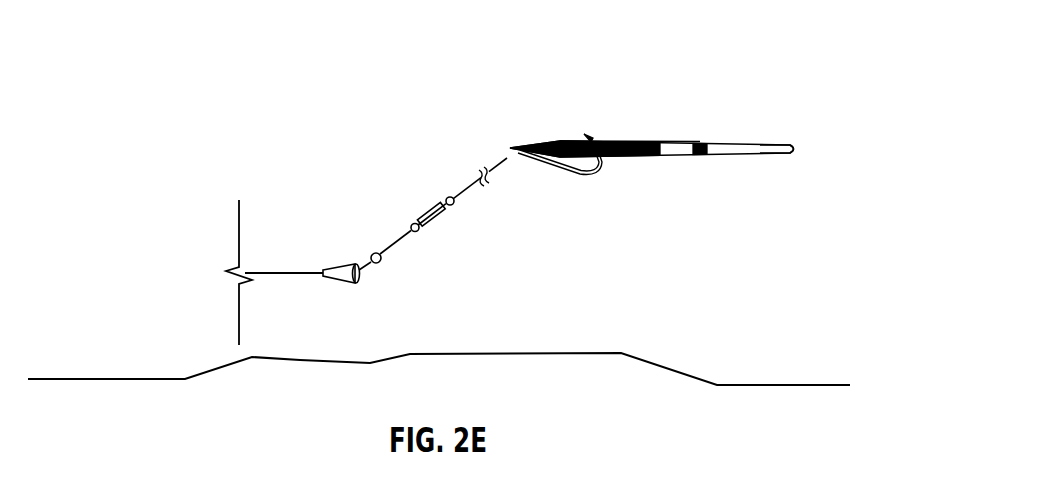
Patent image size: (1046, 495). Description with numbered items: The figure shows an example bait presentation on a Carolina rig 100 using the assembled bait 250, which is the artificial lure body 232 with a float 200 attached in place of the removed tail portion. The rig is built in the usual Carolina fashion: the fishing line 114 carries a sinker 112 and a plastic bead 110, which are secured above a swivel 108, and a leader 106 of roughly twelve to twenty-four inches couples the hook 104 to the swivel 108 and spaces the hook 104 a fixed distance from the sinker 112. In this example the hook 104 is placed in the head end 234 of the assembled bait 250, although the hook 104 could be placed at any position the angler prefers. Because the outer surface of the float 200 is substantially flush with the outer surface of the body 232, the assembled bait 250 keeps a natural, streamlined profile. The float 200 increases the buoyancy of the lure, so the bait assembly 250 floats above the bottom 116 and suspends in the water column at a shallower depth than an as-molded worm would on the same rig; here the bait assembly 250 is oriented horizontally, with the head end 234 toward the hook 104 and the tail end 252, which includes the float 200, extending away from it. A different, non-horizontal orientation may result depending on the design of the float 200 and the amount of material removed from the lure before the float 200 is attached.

The Carolina rig 100 is at (279, 87).
The hook 104 is at (560, 170).
The leader 106 is at (503, 160).
The swivel 108 is at (428, 207).
The plastic bead 110 is at (374, 252).
The sinker 112 is at (337, 268).
The fishing line 114 is at (285, 272).
The bottom 116 is at (516, 353).
The float 200 is at (689, 122).
The body 232 is at (613, 134).
The head end 234 is at (565, 140).
The assembled bait 250 is at (703, 134).
The tail end 252 is at (796, 150).